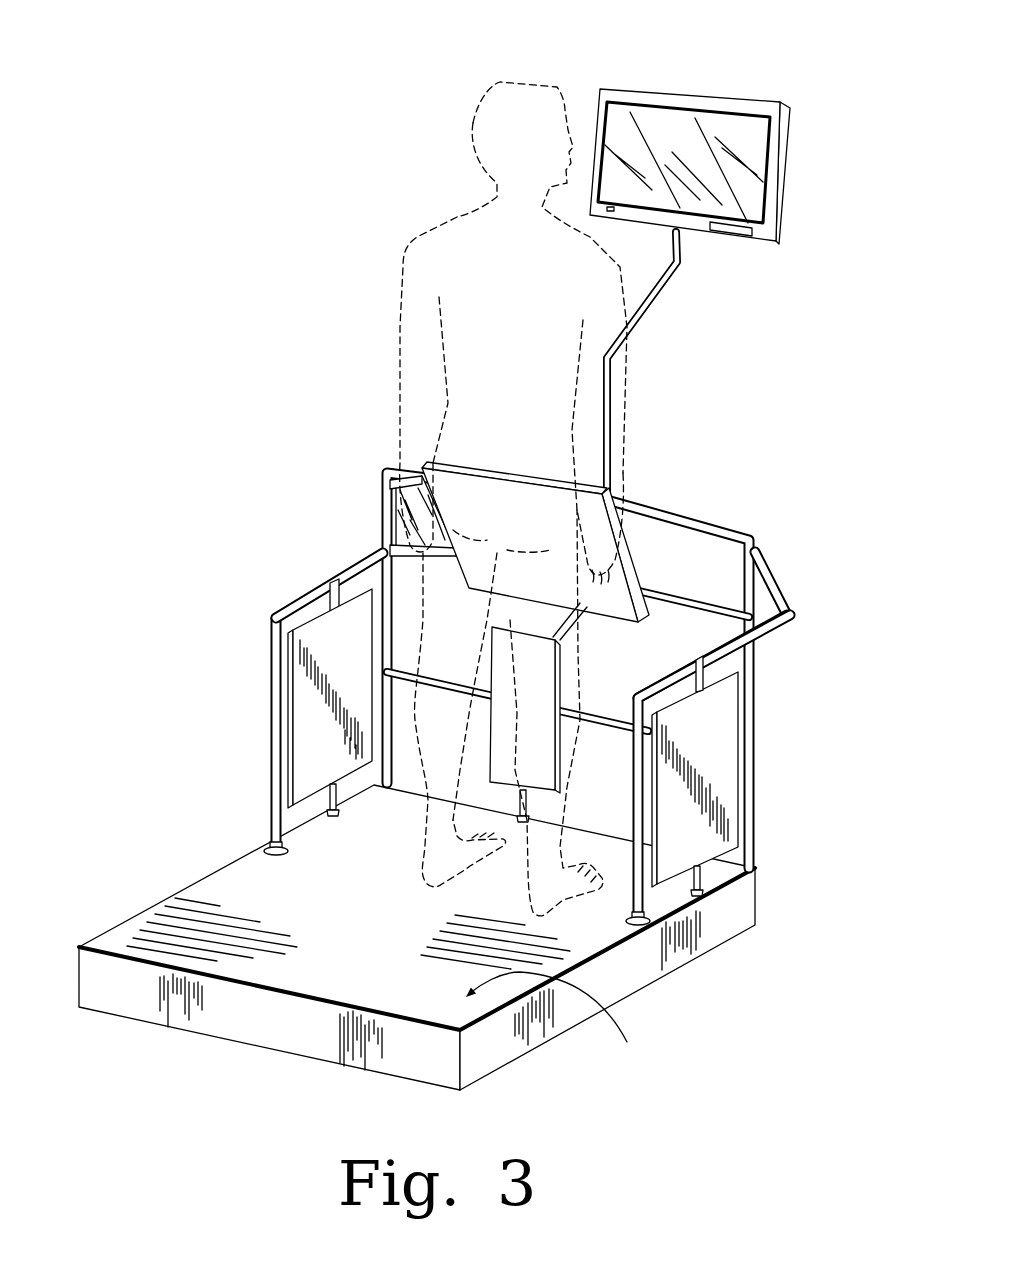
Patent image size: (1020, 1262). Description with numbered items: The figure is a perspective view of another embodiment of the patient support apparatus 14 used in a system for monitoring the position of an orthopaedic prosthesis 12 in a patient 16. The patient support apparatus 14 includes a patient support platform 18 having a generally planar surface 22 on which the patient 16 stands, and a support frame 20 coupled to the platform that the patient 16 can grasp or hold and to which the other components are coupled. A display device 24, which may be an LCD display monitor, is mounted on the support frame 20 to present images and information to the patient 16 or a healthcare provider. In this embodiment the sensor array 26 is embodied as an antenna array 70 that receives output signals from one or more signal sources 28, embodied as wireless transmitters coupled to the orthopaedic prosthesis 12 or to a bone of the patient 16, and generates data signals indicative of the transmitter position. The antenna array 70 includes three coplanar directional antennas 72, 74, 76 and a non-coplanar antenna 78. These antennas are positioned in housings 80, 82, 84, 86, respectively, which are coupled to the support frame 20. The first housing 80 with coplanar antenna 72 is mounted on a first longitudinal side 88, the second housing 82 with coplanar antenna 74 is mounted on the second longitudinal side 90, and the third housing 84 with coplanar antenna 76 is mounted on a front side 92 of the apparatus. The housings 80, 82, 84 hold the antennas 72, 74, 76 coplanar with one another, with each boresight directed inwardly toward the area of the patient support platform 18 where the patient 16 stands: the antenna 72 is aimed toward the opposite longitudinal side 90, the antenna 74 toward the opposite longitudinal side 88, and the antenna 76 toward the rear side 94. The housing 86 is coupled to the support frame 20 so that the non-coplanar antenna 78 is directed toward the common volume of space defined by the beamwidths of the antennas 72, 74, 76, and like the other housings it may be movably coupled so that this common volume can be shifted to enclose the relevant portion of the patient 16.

The orthopaedic prosthesis 12 is at (567, 672).
The patient support apparatus 14 is at (290, 90).
The patient 16 is at (522, 78).
The patient support platform 18 is at (240, 892).
The support frame 20 is at (770, 567).
The planar surface 22 is at (555, 1023).
The display device 24 is at (735, 100).
The sensor array 26 is at (343, 447).
The signal source 28 is at (575, 690).
The antenna array 70 is at (790, 547).
The coplanar antenna 72 is at (722, 770).
The coplanar antenna 74 is at (303, 728).
The coplanar antenna 76 is at (520, 690).
The non-coplanar antenna 78 is at (538, 516).
The first housing 80 is at (712, 868).
The second housing 82 is at (315, 612).
The third housing 84 is at (562, 760).
The housing 86 is at (640, 590).
The first longitudinal side 88 is at (782, 800).
The second longitudinal side 90 is at (256, 660).
The front side 92 is at (770, 660).
The rear side 94 is at (238, 1056).